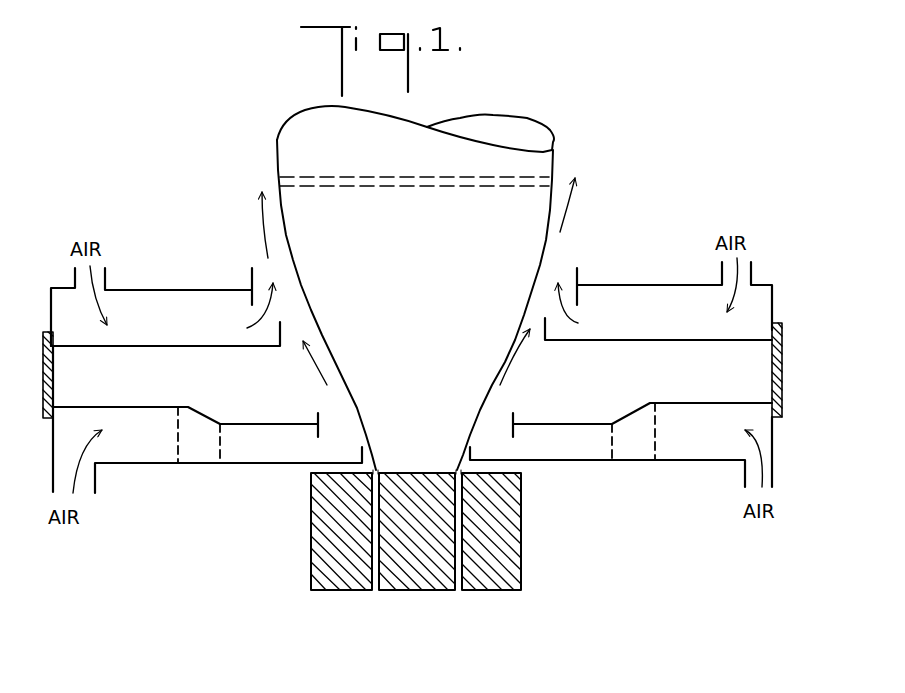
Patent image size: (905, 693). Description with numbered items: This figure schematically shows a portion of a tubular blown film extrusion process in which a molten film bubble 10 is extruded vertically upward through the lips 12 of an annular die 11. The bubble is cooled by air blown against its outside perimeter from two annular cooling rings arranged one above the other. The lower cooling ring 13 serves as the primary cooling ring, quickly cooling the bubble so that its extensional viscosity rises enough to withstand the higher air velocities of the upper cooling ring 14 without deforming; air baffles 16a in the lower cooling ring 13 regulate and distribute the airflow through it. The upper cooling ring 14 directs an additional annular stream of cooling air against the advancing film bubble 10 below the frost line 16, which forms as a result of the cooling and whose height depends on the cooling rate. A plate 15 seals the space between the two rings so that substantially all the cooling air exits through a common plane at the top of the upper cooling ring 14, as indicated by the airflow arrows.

The molten film bubble 10 is at (432, 262).
The annular die 11 is at (306, 551).
The lips 12 is at (455, 464).
The lower cooling ring 13 is at (792, 450).
The upper cooling ring 14 is at (776, 271).
The plate 15 is at (786, 362).
The frost line 16 is at (533, 178).
The air baffles 16a is at (653, 450).